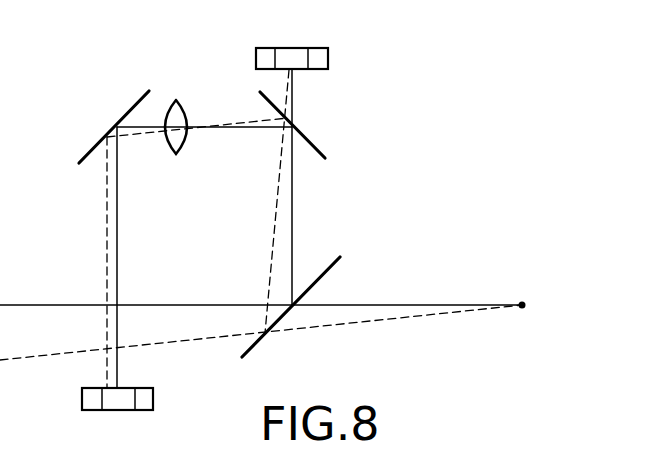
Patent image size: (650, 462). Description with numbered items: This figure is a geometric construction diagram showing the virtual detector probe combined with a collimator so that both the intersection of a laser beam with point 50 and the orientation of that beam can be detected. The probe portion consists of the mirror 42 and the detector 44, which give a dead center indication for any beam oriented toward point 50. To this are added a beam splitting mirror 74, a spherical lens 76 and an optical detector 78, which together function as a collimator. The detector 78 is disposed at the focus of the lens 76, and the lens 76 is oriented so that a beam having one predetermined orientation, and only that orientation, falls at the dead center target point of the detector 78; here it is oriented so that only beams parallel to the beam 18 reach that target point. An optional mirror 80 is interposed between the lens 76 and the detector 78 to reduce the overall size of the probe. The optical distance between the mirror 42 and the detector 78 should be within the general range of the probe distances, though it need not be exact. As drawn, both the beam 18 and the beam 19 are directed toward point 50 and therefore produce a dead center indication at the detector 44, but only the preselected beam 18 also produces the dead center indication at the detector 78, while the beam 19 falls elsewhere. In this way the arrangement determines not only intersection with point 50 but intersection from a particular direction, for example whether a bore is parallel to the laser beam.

The beam 18 is at (10, 305).
The beam 19 is at (16, 358).
The mirror 42 is at (333, 262).
The detector 44 is at (329, 49).
The point 50 is at (525, 302).
The beam splitting mirror 74 is at (323, 150).
The spherical lens 76 is at (190, 85).
The optical detector 78 is at (154, 400).
The mirror 80 is at (87, 155).